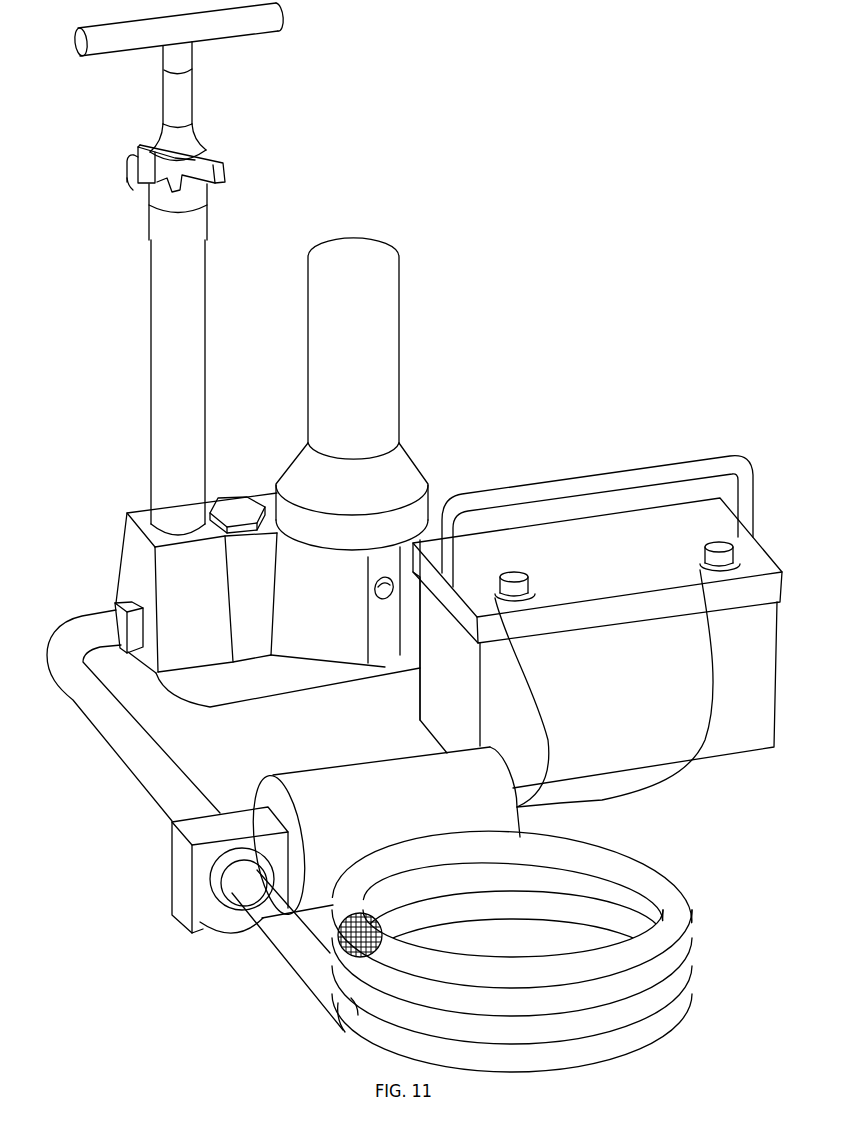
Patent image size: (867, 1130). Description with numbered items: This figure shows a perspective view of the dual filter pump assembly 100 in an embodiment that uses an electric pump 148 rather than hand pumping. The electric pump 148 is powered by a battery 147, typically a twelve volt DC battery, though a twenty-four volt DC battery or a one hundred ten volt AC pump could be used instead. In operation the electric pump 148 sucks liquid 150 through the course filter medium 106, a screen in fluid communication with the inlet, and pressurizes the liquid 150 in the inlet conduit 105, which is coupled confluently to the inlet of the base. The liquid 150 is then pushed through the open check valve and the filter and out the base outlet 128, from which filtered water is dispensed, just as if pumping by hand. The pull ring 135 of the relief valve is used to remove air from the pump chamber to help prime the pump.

The dual filter pump assembly 100 is at (422, 538).
The pull ring 135 is at (128, 178).
The base outlet 128 is at (380, 598).
The battery 147 is at (768, 552).
The inlet conduit 105 is at (97, 730).
The electric pump 148 is at (332, 767).
The course filter medium 106 is at (384, 948).
The liquid 150 is at (362, 961).